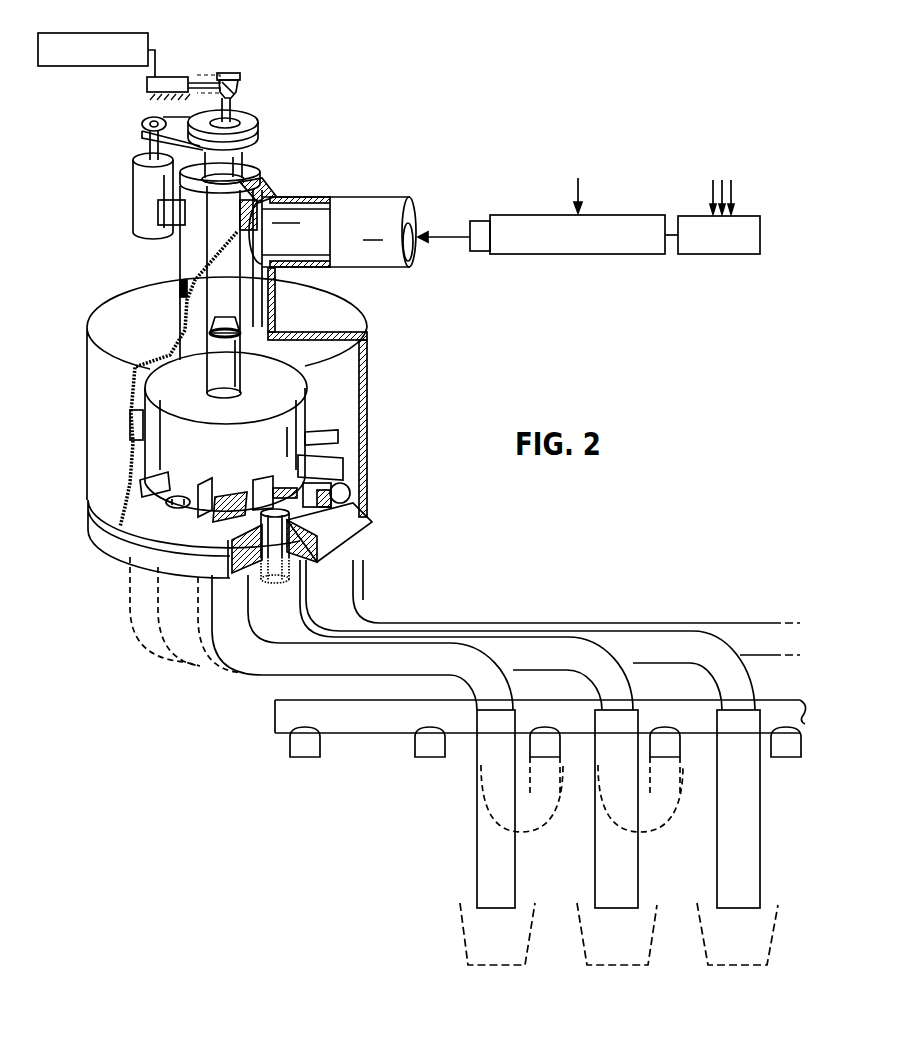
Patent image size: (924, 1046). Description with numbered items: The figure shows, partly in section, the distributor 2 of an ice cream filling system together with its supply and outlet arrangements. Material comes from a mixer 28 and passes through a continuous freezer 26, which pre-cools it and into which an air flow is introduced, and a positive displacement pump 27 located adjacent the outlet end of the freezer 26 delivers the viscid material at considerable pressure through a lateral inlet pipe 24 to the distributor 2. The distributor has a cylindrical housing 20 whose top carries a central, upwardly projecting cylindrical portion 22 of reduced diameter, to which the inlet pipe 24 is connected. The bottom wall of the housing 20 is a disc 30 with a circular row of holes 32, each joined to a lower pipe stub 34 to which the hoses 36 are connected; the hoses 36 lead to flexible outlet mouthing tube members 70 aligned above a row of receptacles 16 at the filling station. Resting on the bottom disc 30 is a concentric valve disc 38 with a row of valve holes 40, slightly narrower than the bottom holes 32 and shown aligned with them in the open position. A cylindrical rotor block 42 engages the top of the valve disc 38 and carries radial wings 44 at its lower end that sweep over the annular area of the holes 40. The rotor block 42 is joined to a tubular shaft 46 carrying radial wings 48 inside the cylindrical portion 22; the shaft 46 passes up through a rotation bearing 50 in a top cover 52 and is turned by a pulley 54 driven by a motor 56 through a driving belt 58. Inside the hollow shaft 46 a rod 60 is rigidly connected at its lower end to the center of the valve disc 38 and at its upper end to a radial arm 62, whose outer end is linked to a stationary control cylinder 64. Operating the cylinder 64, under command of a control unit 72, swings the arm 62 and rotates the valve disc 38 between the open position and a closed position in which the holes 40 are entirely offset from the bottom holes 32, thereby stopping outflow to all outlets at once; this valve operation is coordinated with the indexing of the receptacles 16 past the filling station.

The distributor 2 is at (107, 315).
The receptacles 16 is at (463, 930).
The cylindrical housing 20 is at (113, 448).
The cylindrical portion 22 is at (182, 252).
The lateral inlet pipe 24 is at (318, 196).
The continuous freezer 26 is at (535, 254).
The positive displacement pump 27 is at (476, 251).
The mixer 28 is at (710, 254).
The bottom disc 30 is at (128, 586).
The bottom holes 32 is at (360, 528).
The lower pipe stub 34 is at (285, 600).
The hoses 36 is at (383, 662).
The valve disc 38 is at (332, 495).
The valve holes 40 is at (343, 455).
The rotor block 42 is at (173, 433).
The radial wings 44 is at (322, 432).
The tubular shaft 46 is at (330, 362).
The radial wings 48 is at (183, 275).
The rotation bearing 50 is at (313, 217).
The top cover 52 is at (244, 164).
The pulley 54 is at (258, 117).
The motor 56 is at (141, 208).
The driving belt 58 is at (177, 110).
The rod 60 is at (235, 112).
The radial arm 62 is at (222, 74).
The control cylinder 64 is at (196, 54).
The outlet mouthing tube members 70 is at (497, 752).
The control unit 72 is at (103, 32).